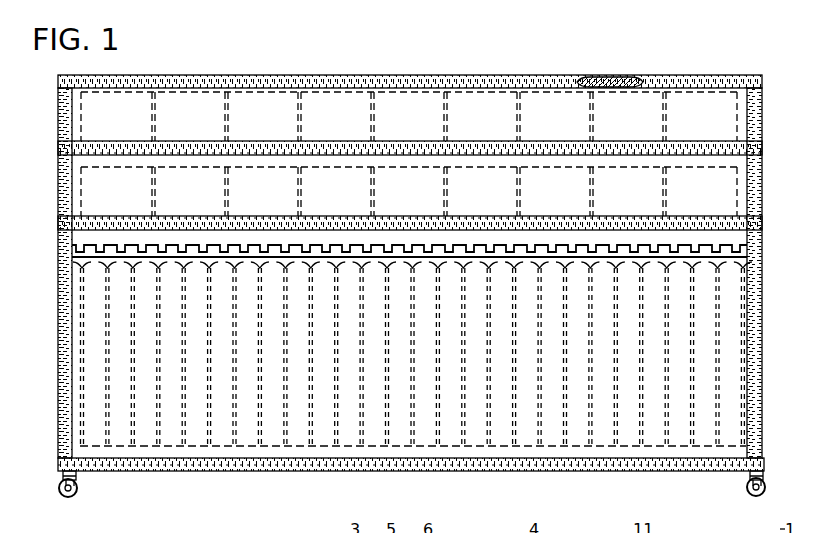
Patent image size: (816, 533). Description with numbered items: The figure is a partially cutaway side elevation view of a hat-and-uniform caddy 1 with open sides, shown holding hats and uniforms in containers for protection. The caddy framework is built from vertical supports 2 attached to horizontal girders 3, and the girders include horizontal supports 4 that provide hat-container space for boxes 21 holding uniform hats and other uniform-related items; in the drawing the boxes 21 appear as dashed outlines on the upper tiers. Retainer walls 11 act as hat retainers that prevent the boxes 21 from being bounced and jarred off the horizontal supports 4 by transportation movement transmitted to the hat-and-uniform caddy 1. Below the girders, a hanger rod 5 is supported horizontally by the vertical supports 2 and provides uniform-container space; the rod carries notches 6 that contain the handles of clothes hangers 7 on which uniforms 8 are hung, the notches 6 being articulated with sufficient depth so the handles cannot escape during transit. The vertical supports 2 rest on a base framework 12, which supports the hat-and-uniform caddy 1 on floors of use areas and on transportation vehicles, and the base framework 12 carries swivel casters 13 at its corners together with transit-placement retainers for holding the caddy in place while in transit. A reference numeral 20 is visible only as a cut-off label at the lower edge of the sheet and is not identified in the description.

The hat-and-uniform caddy 1 is at (716, 48).
The vertical supports 2 is at (67, 250).
The horizontal girders 3 is at (275, 225).
The horizontal supports 4 is at (612, 80).
The hanger rod 5 is at (87, 256).
The notches 6 is at (105, 248).
The clothes hangers 7 is at (120, 263).
The uniforms 8 is at (132, 345).
The retainer walls 11 is at (628, 80).
The base framework 12 is at (118, 493).
The swivel casters 13 is at (70, 498).
The second figure element (cut off) 20 is at (297, 526).
The boxes 21 is at (442, 165).